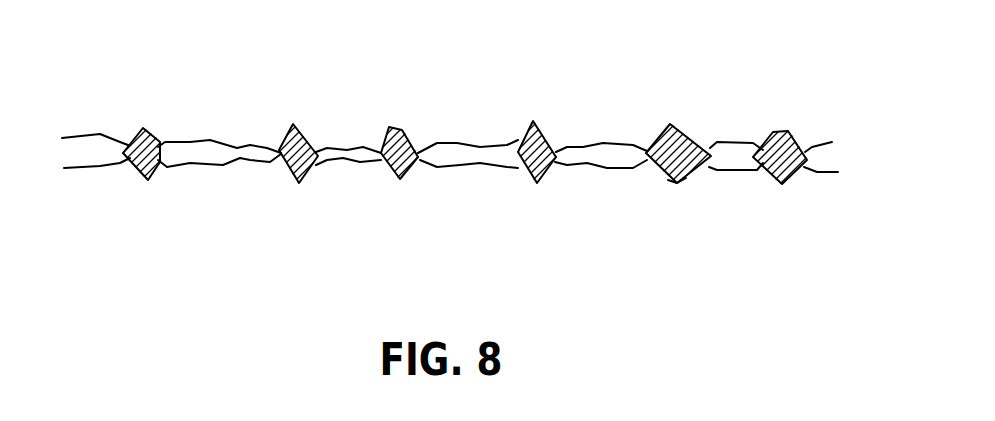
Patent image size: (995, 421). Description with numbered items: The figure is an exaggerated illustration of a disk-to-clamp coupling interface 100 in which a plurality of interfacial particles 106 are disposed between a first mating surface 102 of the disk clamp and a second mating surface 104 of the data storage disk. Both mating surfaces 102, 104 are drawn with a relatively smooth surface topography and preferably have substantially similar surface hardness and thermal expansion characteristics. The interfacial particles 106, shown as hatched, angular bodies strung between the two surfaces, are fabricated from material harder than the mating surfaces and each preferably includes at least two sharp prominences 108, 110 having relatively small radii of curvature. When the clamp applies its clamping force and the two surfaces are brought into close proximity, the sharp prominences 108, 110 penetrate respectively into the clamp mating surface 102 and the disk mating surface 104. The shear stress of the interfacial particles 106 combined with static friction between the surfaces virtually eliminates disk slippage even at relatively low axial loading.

The disk-to-clamp coupling interface 100 is at (799, 51).
The first mating surface 102 is at (183, 141).
The second mating surface 104 is at (223, 167).
The interfacial particles 106 is at (298, 128).
The sharp prominence 108 is at (670, 124).
The sharp prominence 110 is at (676, 186).